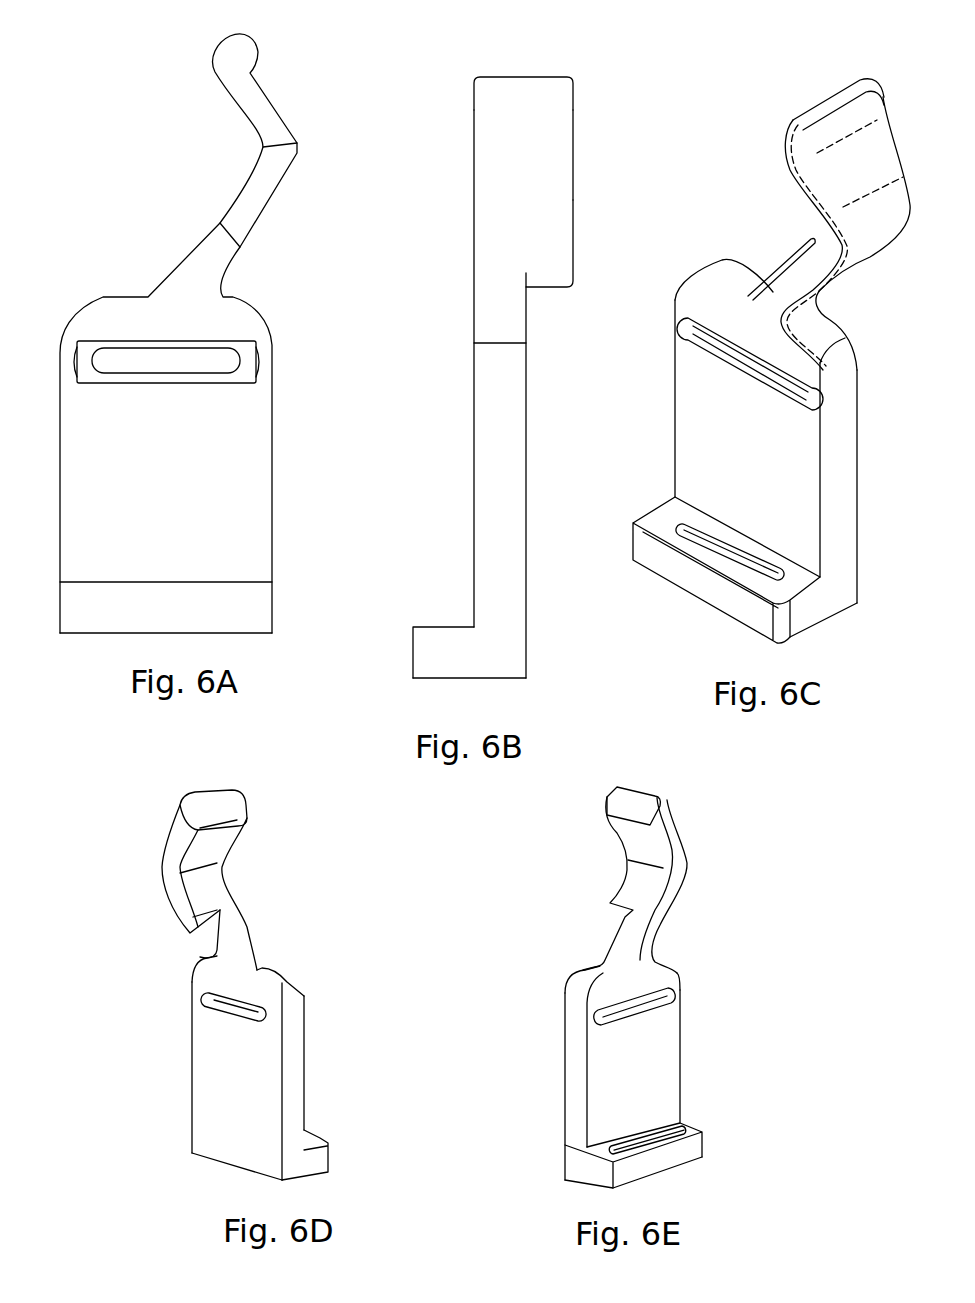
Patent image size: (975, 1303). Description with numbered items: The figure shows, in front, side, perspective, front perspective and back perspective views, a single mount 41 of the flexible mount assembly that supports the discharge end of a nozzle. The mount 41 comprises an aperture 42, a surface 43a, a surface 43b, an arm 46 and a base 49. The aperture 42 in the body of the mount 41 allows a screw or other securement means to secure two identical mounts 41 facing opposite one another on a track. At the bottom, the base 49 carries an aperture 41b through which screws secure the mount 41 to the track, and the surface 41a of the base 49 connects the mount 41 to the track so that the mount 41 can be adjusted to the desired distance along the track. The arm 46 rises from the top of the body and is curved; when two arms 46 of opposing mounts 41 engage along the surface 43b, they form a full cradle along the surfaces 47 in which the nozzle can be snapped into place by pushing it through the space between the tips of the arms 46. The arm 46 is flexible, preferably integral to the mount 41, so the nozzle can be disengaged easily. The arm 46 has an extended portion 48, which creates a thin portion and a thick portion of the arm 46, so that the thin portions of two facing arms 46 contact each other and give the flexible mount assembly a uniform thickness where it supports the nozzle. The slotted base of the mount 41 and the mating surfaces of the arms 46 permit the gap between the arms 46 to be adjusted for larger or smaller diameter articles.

In FIG. 6A, the mount 41 is at (132, 108).
In FIG. 6B, the mount 41 is at (530, 72).
In FIG. 6C, the mount 41 is at (818, 82).
In FIG. 6D, the mount 41 is at (125, 878).
In FIG. 6E, the mount 41 is at (755, 850).
In FIG. 6A, the surface 41a is at (118, 633).
In FIG. 6B, the surface 41a is at (452, 678).
In FIG. 6C, the surface 41a is at (807, 627).
In FIG. 6D, the surface 41a is at (227, 1167).
In FIG. 6E, the surface 41a is at (688, 1170).
In FIG. 6C, the aperture 41b is at (697, 527).
In FIG. 6E, the aperture 41b is at (672, 1127).
In FIG. 6A, the aperture 42 is at (128, 388).
In FIG. 6C, the aperture 42 is at (720, 362).
In FIG. 6D, the aperture 42 is at (223, 1017).
In FIG. 6E, the aperture 42 is at (652, 1012).
In FIG. 6A, the surface 43a is at (220, 485).
In FIG. 6B, the surface 43a is at (473, 387).
In FIG. 6C, the surface 43a is at (788, 522).
In FIG. 6D, the surface 43a is at (305, 1012).
In FIG. 6E, the surface 43a is at (622, 1080).
In FIG. 6B, the surface 43b is at (528, 399).
In FIG. 6C, the surface 43b is at (857, 455).
In FIG. 6D, the surface 43b is at (242, 1095).
In FIG. 6E, the surface 43b is at (565, 1012).
In FIG. 6A, the arm 46 is at (274, 96).
In FIG. 6B, the arm 46 is at (578, 147).
In FIG. 6C, the arm 46 is at (887, 133).
In FIG. 6D, the arm 46 is at (233, 885).
In FIG. 6E, the arm 46 is at (613, 877).
In FIG. 6A, the surface 47 is at (240, 186).
In FIG. 6C, the surface 47 is at (807, 193).
In FIG. 6D, the surface 47 is at (220, 838).
In FIG. 6E, the surface 47 is at (630, 827).
In FIG. 6B, the extended portion 48 is at (578, 240).
In FIG. 6C, the extended portion 48 is at (898, 150).
In FIG. 6D, the extended portion 48 is at (167, 820).
In FIG. 6E, the extended portion 48 is at (623, 845).
In FIG. 6A, the base 49 is at (257, 637).
In FIG. 6B, the base 49 is at (440, 618).
In FIG. 6C, the base 49 is at (675, 568).
In FIG. 6D, the base 49 is at (323, 1158).
In FIG. 6E, the base 49 is at (583, 1165).